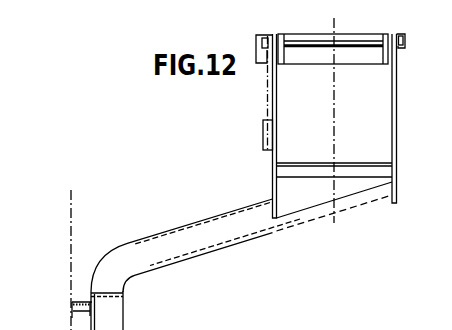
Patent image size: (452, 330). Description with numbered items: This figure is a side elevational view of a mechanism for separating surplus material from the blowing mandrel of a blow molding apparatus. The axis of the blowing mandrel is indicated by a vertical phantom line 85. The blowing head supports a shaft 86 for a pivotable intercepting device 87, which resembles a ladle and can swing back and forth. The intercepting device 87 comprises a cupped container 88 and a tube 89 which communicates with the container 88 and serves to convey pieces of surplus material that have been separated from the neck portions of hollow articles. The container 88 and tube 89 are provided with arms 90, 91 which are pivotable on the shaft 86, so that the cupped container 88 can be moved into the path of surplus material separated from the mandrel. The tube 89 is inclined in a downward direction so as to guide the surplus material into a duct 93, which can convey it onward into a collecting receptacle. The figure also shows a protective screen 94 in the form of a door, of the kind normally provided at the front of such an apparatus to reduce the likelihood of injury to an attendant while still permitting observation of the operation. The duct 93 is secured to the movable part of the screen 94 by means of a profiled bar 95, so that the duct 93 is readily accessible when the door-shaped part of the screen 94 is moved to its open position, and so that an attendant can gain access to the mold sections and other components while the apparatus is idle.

The vertical phantom line 85 is at (336, 137).
The shaft 86 is at (360, 42).
The intercepting device 87 is at (210, 219).
The cupped container 88 is at (276, 190).
The tube 89 is at (372, 197).
The arm 90 is at (397, 113).
The arm 91 is at (268, 110).
The duct 93 is at (112, 318).
The protective screen 94 is at (70, 219).
The profiled bar 95 is at (77, 303).